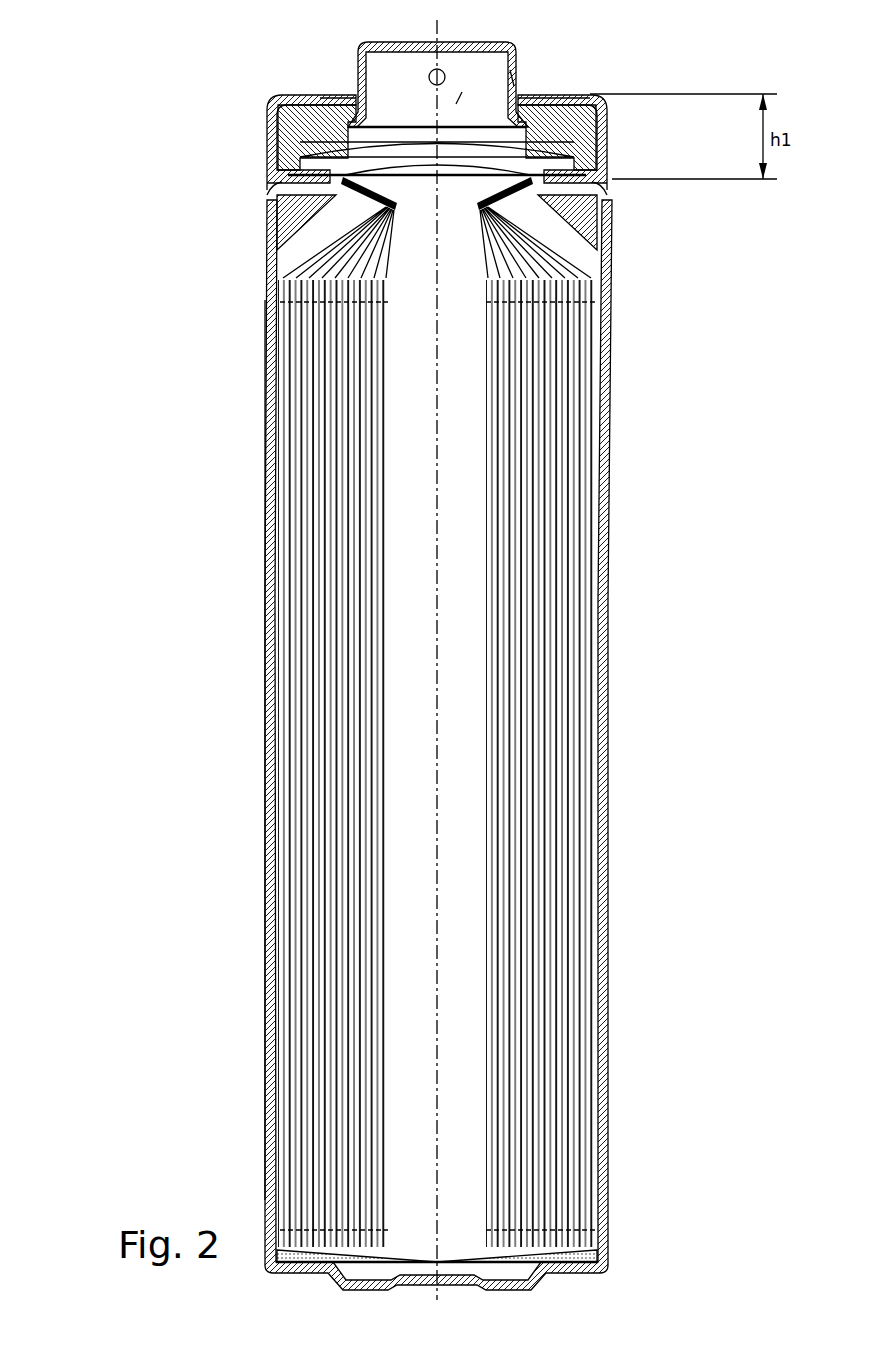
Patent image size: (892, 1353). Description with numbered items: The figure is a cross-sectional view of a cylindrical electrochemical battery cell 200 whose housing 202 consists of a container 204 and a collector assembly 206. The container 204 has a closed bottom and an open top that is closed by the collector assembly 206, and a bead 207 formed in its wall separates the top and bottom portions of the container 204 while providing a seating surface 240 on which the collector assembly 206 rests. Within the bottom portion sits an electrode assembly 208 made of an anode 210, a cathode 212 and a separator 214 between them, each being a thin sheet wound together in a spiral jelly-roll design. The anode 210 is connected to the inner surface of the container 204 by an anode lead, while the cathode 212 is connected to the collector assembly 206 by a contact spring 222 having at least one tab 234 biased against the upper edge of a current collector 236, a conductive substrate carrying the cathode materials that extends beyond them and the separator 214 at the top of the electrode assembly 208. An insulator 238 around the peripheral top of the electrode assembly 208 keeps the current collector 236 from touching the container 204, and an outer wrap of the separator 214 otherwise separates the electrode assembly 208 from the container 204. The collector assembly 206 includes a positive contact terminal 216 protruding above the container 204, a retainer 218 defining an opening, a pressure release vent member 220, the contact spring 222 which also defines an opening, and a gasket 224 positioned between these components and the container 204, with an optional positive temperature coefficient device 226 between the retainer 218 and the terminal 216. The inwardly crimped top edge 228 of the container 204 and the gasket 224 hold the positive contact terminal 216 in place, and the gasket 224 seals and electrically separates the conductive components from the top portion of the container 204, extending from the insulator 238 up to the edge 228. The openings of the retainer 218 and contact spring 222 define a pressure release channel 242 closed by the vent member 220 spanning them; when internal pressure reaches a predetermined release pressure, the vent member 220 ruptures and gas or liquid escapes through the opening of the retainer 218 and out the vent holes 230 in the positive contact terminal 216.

The electrochemical battery cell 200 is at (130, 70).
The housing 202 is at (373, 733).
The container 204 is at (266, 472).
The collector assembly 206 is at (439, 99).
The bead 207 is at (276, 194).
The electrode assembly 208 is at (300, 415).
The anode 210 is at (455, 771).
The cathode 212 is at (600, 360).
The separator 214 is at (600, 390).
The positive contact terminal 216 is at (363, 49).
The retainer 218 is at (300, 128).
The pressure release vent member 220 is at (445, 178).
The contact spring 222 is at (290, 156).
The gasket 224 is at (612, 136).
The positive temperature coefficient (PTC) device 226 is at (548, 97).
The inwardly crimped top edge 228 is at (318, 98).
The vent holes 230 is at (428, 78).
The tab 234 is at (477, 186).
The current collector 236 is at (600, 243).
The insulator 238 is at (300, 245).
The seating surface 240 is at (598, 170).
The pressure release channel 242 is at (476, 91).